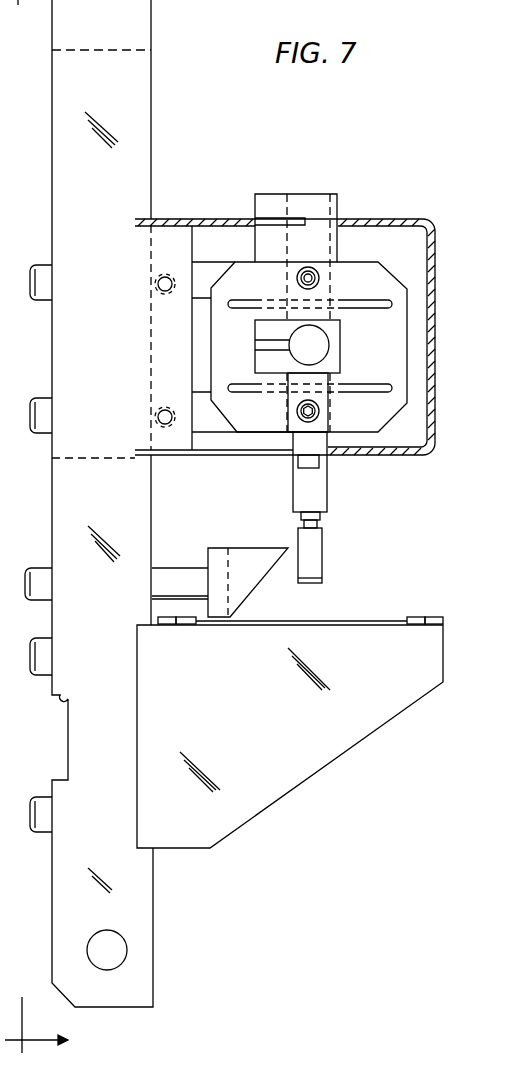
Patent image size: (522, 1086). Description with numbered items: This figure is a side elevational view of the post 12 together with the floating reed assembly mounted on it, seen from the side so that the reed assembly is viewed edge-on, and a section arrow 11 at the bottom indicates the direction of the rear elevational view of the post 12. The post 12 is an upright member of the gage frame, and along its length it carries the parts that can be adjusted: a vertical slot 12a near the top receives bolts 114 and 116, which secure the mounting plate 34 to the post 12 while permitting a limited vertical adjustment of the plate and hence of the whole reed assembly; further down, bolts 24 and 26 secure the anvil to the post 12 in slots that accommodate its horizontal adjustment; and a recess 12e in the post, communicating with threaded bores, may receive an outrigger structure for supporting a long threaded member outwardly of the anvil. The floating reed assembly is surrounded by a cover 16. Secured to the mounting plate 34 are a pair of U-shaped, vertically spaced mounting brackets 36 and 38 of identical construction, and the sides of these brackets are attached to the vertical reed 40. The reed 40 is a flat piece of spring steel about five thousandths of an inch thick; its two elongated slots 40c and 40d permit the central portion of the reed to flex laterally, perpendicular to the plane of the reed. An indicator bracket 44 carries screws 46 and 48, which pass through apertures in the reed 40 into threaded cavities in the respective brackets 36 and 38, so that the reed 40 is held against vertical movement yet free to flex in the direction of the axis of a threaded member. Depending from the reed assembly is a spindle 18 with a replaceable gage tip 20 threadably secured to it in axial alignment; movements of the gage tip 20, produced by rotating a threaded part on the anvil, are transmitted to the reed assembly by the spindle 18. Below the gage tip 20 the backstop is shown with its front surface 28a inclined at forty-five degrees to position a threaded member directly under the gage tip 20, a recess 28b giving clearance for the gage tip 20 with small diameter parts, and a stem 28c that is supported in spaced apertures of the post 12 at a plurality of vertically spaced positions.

The section line 11 is at (52, 1025).
The post member 12 is at (132, 18).
The vertical slot 12a is at (96, 452).
The recess 12e is at (83, 686).
The bolt 114 is at (45, 281).
The bolt 116 is at (45, 418).
The bolt 24 is at (50, 657).
The bolt 26 is at (47, 815).
The cover 16 is at (437, 243).
The mounting plate 34 is at (166, 240).
The mounting bracket 36 is at (205, 282).
The mounting bracket 38 is at (207, 422).
The vertical reed 40 is at (410, 349).
The elongated slot 40c is at (350, 302).
The elongated slot 40d is at (360, 386).
The indicator bracket 44 is at (267, 355).
The screw 46 is at (312, 275).
The screw 48 is at (315, 413).
The spindle 18 is at (318, 483).
The gage tip 20 is at (312, 545).
The front surface 28a is at (280, 572).
The recess 28b is at (230, 562).
The stem 28c is at (178, 578).